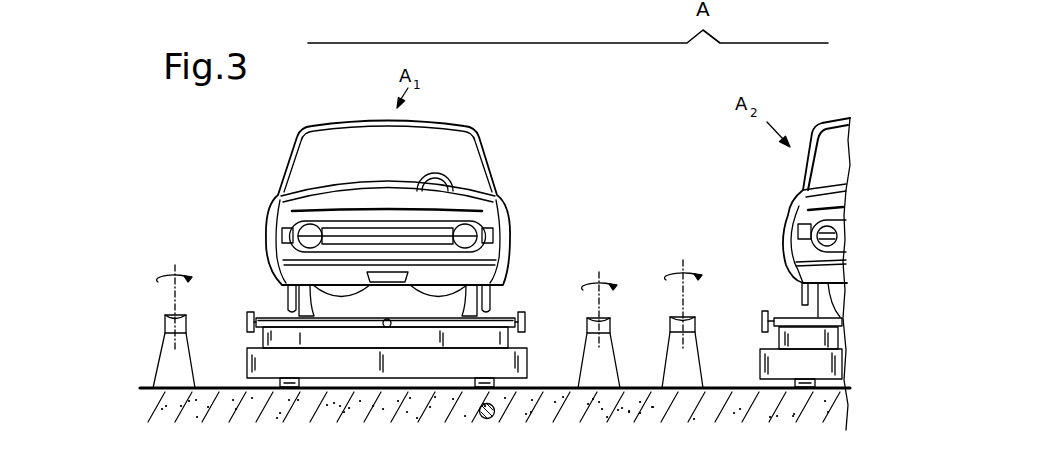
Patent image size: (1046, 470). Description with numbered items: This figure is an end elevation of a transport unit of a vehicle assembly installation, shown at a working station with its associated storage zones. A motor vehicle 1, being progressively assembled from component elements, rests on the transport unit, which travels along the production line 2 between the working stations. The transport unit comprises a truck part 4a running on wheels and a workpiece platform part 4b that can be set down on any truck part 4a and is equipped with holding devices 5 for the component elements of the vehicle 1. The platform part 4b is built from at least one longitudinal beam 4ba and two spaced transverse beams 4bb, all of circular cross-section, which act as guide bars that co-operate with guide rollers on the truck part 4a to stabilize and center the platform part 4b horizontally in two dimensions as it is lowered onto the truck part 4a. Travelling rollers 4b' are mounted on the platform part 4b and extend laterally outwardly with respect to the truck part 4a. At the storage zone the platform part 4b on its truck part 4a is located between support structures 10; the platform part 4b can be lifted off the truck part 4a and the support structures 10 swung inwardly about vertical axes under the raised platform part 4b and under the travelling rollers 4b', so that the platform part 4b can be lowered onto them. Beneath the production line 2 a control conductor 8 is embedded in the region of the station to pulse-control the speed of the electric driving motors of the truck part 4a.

The motor vehicle 1 is at (482, 152).
The production line 2 is at (553, 286).
The truck part 4a is at (264, 373).
The workpiece platform part 4b is at (398, 294).
The travelling rollers 4b' is at (382, 329).
The longitudinal beam 4ba is at (384, 320).
The transverse beams 4bb is at (280, 322).
The holding devices 5 is at (318, 307).
The control conductor 8 is at (487, 419).
The support structures 10 is at (170, 360).